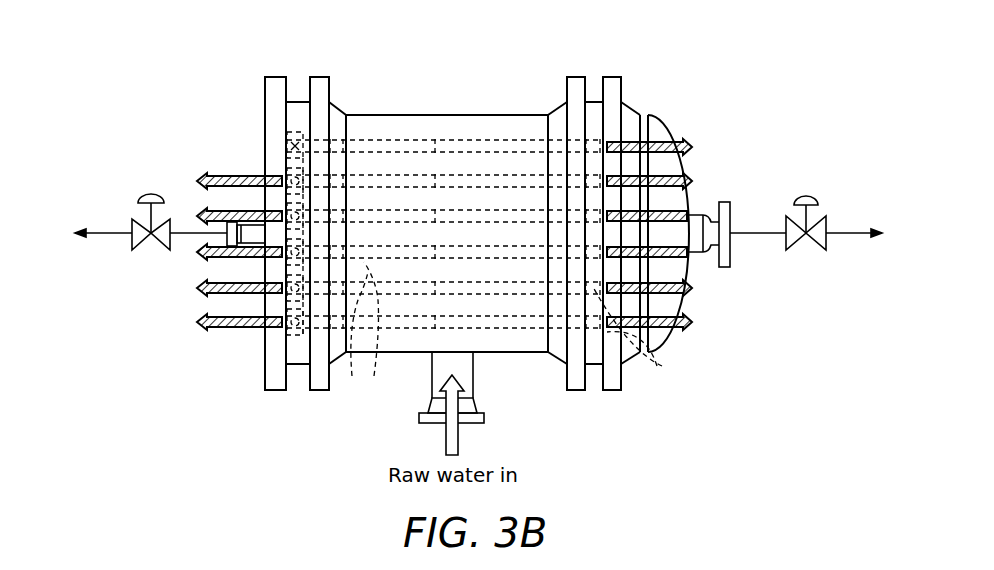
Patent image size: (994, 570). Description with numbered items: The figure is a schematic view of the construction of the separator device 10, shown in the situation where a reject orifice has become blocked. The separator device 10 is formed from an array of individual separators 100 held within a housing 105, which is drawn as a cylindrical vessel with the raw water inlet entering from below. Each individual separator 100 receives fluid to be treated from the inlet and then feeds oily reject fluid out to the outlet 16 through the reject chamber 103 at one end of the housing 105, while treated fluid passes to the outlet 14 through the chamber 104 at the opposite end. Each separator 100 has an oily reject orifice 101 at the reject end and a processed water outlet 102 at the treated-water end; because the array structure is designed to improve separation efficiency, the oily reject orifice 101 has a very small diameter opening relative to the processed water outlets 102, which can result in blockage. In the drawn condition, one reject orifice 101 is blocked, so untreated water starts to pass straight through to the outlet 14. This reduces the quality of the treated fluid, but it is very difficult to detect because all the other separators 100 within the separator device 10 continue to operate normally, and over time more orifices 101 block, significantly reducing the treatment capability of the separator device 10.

The separator device 10 is at (384, 150).
The individual separator 100 is at (506, 180).
The oily reject orifice 101 is at (372, 330).
The processed water outlet 102 is at (640, 337).
The reject chamber 103 is at (294, 100).
The chamber 104 is at (591, 100).
The housing 105 is at (527, 355).
The outlet 14 is at (760, 232).
The outlet 16 is at (104, 232).